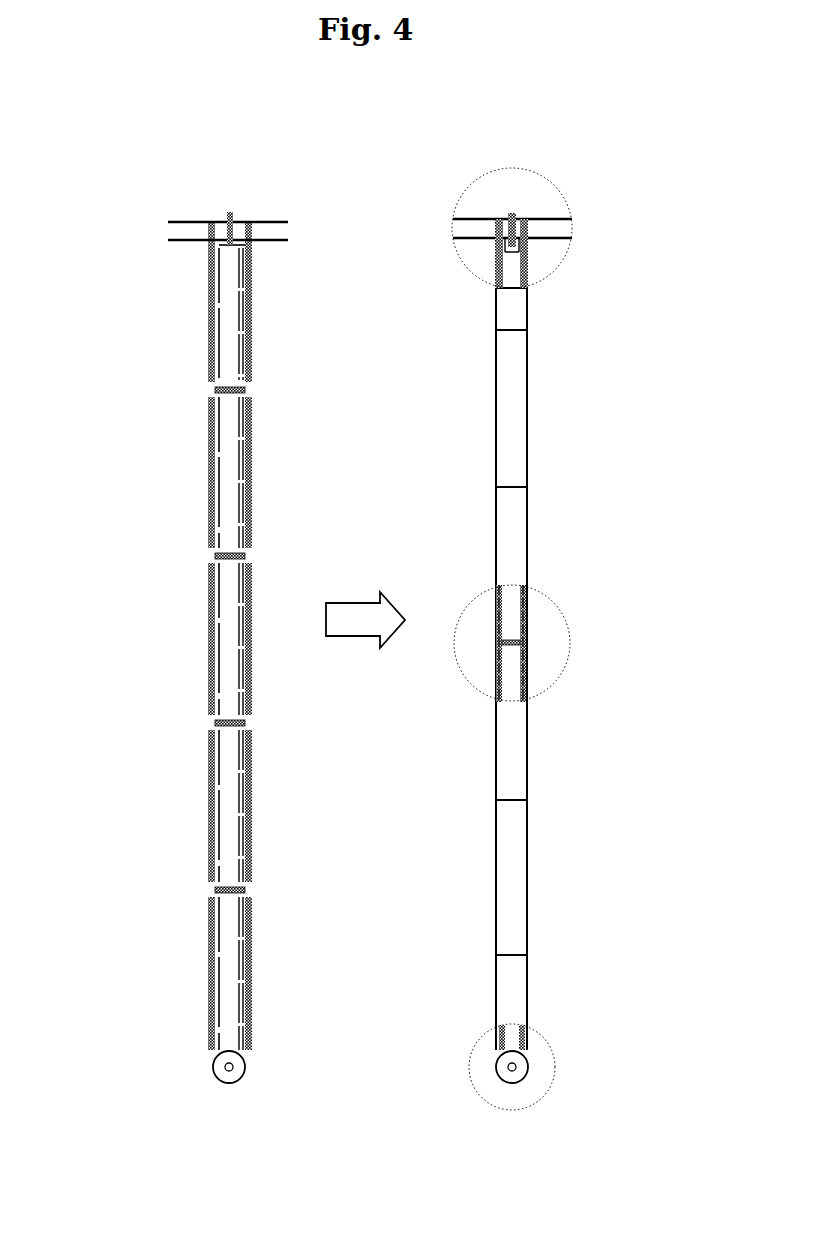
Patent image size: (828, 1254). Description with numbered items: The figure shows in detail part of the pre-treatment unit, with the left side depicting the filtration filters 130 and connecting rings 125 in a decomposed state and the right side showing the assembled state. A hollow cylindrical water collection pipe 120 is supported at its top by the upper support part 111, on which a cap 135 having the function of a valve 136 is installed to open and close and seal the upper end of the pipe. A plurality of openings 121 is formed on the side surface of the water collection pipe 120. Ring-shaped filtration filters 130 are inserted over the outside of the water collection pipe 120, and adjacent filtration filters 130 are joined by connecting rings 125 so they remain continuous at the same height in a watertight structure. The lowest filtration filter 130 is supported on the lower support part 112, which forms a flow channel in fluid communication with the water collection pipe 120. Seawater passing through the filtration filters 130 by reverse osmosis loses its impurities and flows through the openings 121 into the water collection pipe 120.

The upper support part 111 is at (183, 225).
The lower support part 112 is at (229, 1083).
The water collection pipe 120 is at (252, 310).
The openings 121 is at (252, 270).
The connecting ring 125 is at (245, 388).
The filtration filter 130 is at (208, 312).
The cap 135 is at (537, 230).
The valve 136 is at (513, 212).